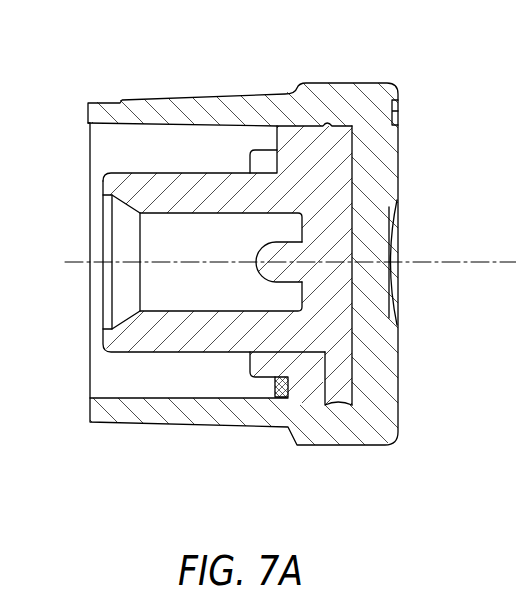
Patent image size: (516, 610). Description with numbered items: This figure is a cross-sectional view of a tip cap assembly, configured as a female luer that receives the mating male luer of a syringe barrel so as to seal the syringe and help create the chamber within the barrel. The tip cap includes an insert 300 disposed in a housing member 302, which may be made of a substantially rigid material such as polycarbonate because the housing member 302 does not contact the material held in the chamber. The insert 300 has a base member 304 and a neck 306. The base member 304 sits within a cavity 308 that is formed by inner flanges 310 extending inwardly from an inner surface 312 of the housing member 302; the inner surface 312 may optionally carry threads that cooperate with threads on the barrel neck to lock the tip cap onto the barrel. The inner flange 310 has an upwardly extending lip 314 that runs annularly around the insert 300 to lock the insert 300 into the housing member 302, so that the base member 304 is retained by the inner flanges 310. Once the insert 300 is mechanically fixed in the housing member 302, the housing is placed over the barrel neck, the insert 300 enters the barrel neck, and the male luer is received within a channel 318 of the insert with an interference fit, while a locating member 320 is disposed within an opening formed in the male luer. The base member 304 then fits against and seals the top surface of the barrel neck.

The insert 300 is at (46, 170).
The housing member 302 is at (232, 102).
The base member 304 is at (340, 392).
The neck 306 is at (138, 337).
The cavity 308 is at (330, 377).
The inner flange 310 is at (308, 380).
The inner surface 312 is at (125, 402).
The upwardly extending lip 314 is at (262, 363).
The channel 318 is at (211, 253).
The locating member 320 is at (268, 253).